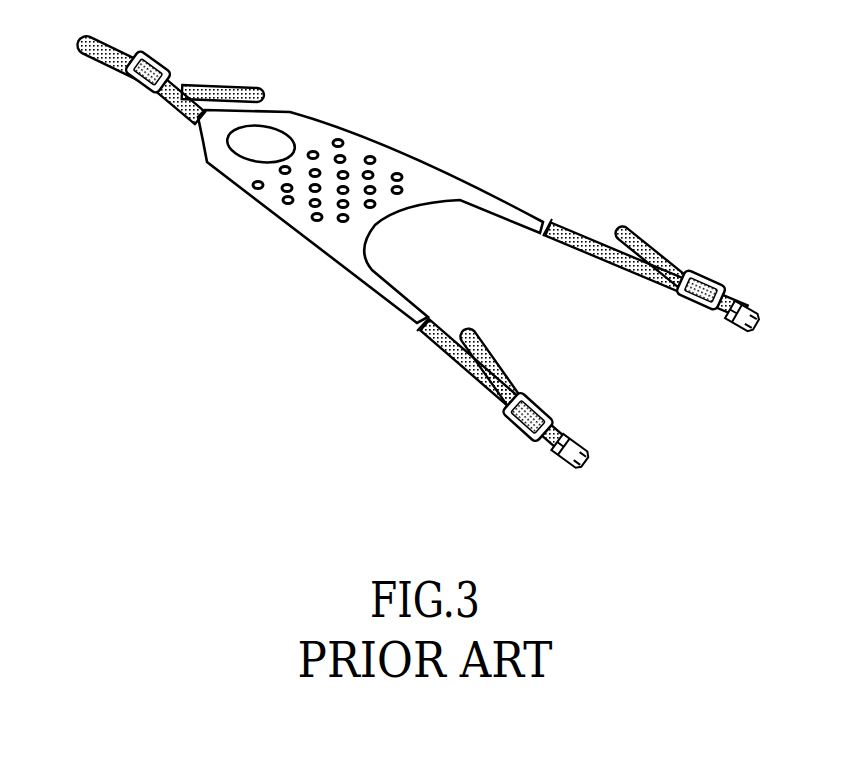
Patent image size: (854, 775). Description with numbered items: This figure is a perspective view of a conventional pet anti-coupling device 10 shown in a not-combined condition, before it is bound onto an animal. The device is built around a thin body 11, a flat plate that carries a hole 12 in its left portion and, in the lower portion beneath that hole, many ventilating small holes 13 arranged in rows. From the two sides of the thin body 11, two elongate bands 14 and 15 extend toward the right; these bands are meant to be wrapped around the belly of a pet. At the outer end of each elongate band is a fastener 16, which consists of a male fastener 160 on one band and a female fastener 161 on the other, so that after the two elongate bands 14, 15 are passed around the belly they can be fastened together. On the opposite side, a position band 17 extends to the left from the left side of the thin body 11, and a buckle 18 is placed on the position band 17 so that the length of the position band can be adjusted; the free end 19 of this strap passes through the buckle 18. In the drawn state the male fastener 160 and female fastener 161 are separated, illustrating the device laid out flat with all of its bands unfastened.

The prior art pet harness 10 is at (424, 250).
The thin body 11 is at (367, 138).
The hole 12 is at (282, 130).
The ventilating small holes 13 is at (372, 174).
The elongate band 14 is at (393, 308).
The elongate band 15 is at (527, 214).
The fastener 16 is at (606, 447).
The male fastener 160 is at (745, 306).
The female fastener 161 is at (572, 437).
The position band 17 is at (170, 108).
The buckle 18 is at (170, 70).
The strap free end 19 is at (92, 58).